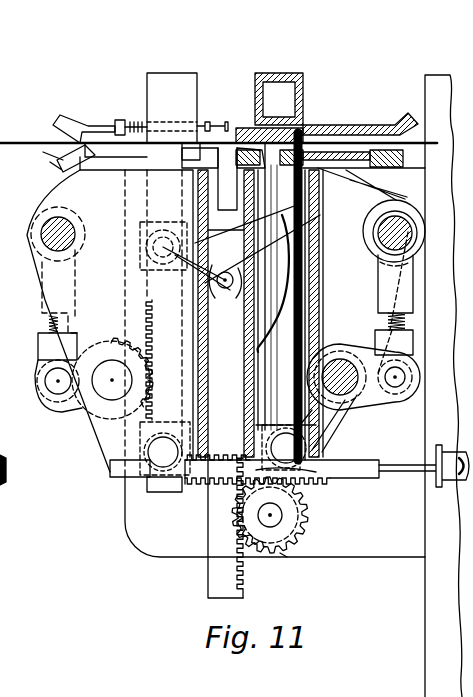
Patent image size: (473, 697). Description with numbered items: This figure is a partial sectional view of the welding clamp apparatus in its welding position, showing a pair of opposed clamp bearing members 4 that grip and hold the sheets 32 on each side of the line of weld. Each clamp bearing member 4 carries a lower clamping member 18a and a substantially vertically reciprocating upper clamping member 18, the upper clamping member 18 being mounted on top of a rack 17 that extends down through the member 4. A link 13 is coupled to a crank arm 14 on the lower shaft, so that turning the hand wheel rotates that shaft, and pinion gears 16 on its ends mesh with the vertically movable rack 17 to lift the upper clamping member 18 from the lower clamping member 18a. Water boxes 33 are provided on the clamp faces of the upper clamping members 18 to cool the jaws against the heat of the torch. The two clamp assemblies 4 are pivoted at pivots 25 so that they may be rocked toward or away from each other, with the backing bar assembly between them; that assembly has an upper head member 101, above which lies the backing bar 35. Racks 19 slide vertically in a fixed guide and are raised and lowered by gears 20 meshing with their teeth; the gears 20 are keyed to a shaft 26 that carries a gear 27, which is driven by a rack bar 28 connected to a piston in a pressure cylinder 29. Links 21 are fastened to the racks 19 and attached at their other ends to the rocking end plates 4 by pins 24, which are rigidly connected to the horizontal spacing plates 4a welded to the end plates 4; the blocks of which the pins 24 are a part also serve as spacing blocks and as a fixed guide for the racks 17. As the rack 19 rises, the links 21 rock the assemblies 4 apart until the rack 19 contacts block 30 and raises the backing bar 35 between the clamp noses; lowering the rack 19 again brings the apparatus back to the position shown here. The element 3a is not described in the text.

The sheets 32 is at (20, 128).
The upper clamping member 18 is at (96, 127).
The water box 33 is at (299, 44).
The backing bar 35 is at (218, 125).
The rack 17 is at (300, 135).
The lower clamping member 18a is at (388, 168).
The plate section 3a is at (45, 156).
The block 30 is at (212, 219).
The clamp bearing member 4 is at (226, 321).
The horizontal spacing plate 4a is at (256, 200).
The pin 24 is at (150, 270).
The link 21 is at (258, 272).
The upper head member 101 is at (213, 302).
The link 13 is at (403, 308).
The pinion gear 16 is at (115, 417).
The crank arm 14 is at (56, 396).
The pivot 25 is at (163, 450).
The pressure cylinder 29 is at (0, 507).
The rack bar 28 is at (358, 478).
The shaft 26 is at (276, 515).
The gear 20 is at (255, 542).
The gear 27 is at (287, 548).
The rack 19 is at (213, 574).